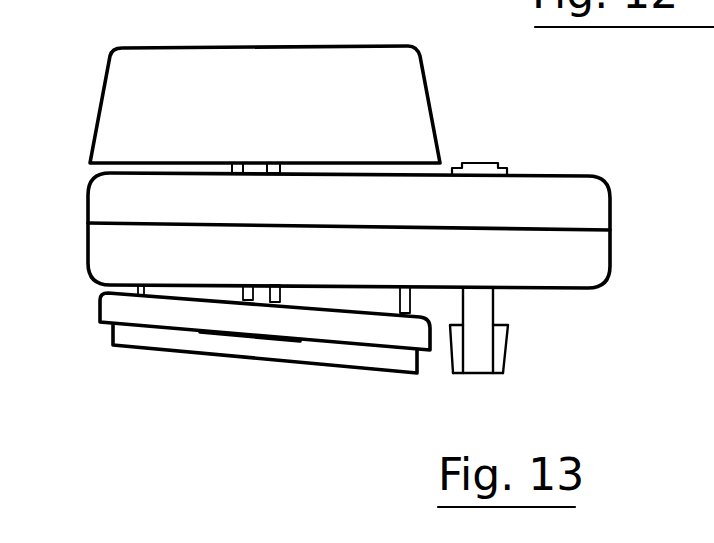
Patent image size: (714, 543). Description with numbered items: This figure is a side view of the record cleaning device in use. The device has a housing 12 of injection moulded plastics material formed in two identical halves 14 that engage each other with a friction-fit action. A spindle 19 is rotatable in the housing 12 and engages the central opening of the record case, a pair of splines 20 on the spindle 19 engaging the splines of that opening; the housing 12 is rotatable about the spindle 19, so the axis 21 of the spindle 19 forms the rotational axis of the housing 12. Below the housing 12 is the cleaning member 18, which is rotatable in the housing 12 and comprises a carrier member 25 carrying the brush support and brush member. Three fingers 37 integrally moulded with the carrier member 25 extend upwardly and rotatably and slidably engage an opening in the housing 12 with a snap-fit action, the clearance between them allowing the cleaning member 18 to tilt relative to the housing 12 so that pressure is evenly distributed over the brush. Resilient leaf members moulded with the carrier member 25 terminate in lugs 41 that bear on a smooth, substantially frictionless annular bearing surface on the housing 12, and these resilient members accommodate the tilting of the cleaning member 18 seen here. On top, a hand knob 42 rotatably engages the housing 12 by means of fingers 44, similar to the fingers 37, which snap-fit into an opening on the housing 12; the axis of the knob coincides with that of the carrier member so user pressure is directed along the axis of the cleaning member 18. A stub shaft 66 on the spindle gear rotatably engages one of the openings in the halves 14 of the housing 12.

The housing 12 is at (543, 203).
The halves 14 is at (588, 212).
The cleaning member 18 is at (103, 312).
The spindle 19 is at (478, 358).
The splines 20 is at (500, 348).
The axis 21 is at (173, 345).
The carrier member 25 is at (352, 338).
The fingers 37 is at (248, 290).
The lugs 41 is at (137, 343).
The hand knob 42 is at (220, 82).
The fingers 44 is at (240, 163).
The stub shaft 66 is at (485, 161).